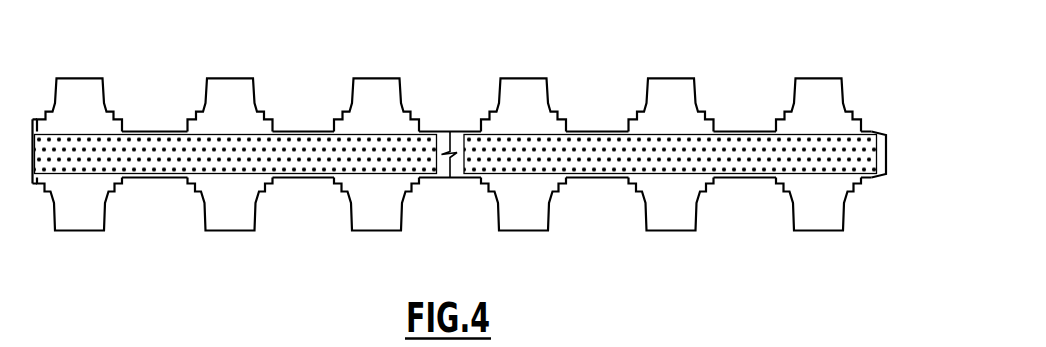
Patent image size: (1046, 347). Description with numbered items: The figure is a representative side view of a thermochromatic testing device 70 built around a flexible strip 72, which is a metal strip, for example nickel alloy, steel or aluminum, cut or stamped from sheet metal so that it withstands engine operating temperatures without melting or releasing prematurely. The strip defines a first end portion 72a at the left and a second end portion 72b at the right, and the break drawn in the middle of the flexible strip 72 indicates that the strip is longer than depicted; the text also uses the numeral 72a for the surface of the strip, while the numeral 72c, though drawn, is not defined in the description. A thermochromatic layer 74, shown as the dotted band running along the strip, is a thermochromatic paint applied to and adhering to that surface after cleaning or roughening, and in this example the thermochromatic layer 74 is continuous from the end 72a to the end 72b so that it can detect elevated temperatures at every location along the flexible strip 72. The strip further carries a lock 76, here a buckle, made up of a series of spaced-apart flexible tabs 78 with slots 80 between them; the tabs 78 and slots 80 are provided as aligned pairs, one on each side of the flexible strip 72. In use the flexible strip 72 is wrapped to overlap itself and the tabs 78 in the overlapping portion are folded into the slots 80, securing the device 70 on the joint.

The device 70 is at (461, 144).
The flexible strip 72 is at (349, 178).
The first end portion 72a is at (52, 197).
The second end portion 72b is at (873, 108).
The top surface of belt body 72c is at (226, 131).
The thermochromatic layer 74 is at (327, 137).
The lock 76 is at (706, 222).
The flexible tabs 78 is at (218, 214).
The slots 80 is at (253, 215).